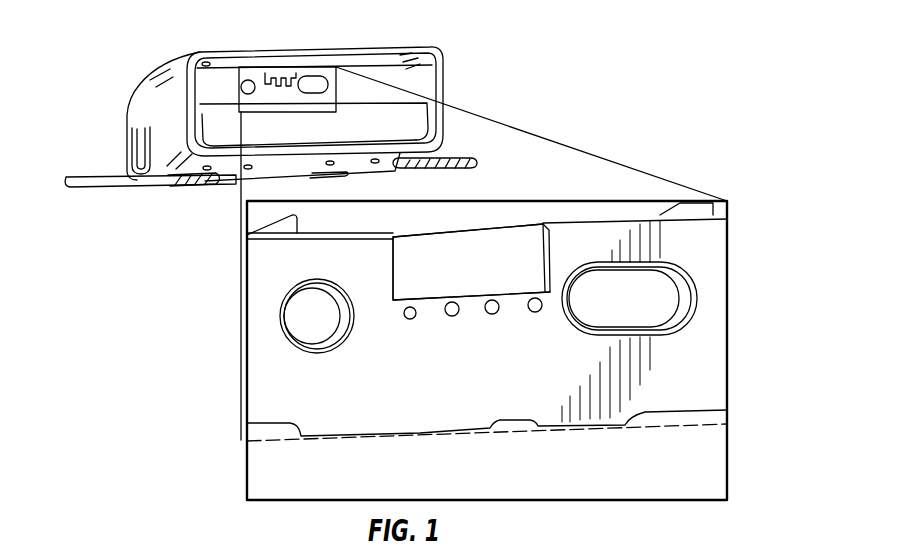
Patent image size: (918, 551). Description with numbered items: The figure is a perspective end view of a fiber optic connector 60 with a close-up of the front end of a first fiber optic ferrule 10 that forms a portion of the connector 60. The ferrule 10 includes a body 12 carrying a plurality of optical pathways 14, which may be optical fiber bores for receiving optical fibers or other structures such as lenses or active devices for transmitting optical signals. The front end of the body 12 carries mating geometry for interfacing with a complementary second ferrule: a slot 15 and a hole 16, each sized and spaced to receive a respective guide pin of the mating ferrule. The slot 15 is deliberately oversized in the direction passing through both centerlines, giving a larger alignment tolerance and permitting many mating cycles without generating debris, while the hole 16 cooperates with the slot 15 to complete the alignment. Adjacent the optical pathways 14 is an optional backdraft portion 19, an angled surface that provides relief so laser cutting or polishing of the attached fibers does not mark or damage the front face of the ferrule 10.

The connector 60 is at (122, 88).
The first fiber optic ferrule 10 is at (385, 75).
The body 12 is at (706, 250).
The optical pathways 14 is at (531, 311).
The slot 15 is at (665, 300).
The hole 16 is at (312, 317).
The backdraft portion 19 is at (418, 277).